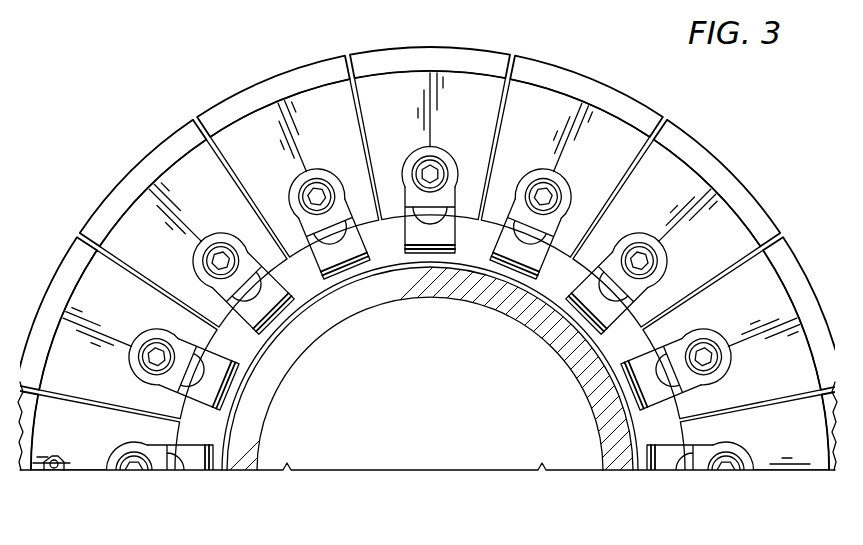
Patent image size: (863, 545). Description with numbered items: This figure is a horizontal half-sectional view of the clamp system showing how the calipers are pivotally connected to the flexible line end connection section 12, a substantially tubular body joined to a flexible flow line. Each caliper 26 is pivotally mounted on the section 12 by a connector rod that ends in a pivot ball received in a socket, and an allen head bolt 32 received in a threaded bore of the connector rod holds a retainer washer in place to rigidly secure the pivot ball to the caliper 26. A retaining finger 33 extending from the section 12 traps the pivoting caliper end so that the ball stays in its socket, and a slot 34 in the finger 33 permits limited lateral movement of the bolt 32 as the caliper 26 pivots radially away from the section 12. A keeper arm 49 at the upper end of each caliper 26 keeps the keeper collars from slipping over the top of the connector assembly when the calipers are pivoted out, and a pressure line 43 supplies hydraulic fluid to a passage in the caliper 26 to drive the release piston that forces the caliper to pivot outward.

The flexible line end connection section 12 is at (365, 305).
The caliper 26 is at (392, 87).
The keeper arm 49 is at (102, 213).
The allen head bolt 32 is at (316, 197).
The retaining finger 33 is at (520, 255).
The slot 34 is at (245, 285).
The pressure line 43 is at (52, 478).